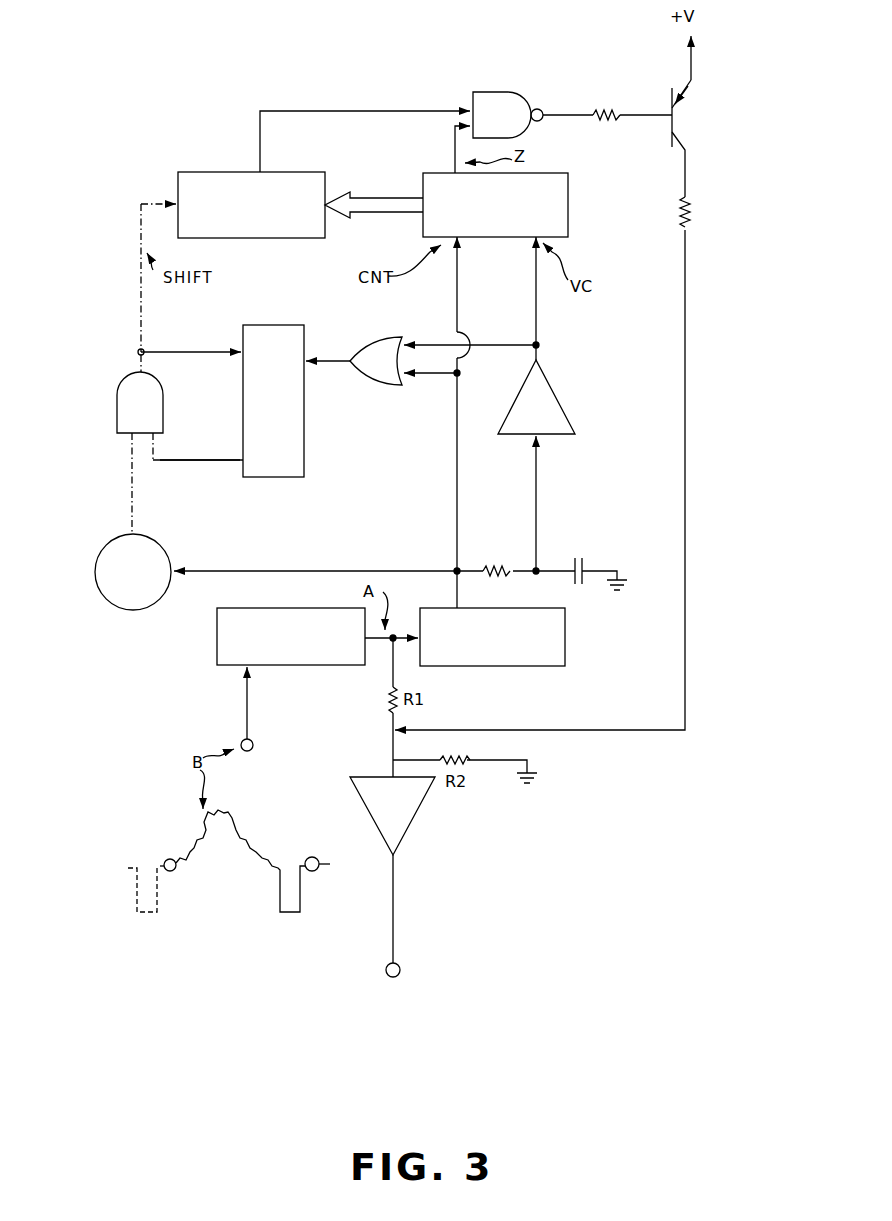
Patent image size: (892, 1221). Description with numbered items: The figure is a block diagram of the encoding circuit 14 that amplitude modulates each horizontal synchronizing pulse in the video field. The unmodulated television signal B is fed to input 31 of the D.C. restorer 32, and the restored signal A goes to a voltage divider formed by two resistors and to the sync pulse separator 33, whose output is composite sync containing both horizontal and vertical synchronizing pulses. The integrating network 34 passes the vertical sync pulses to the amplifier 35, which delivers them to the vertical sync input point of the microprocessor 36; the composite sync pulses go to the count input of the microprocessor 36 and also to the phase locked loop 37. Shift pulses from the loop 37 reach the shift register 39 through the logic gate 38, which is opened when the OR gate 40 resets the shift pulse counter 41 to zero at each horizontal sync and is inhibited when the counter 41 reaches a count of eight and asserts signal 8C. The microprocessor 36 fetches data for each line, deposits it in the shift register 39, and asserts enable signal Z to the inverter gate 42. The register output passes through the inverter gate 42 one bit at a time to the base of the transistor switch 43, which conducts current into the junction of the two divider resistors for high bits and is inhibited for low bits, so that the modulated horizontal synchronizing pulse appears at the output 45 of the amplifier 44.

The encoding circuit 14 is at (699, 453).
The input 31 is at (254, 743).
The D.C. restorer 32 is at (301, 646).
The sync pulse separator 33 is at (502, 646).
The integrating network 34 is at (518, 581).
The amplifier 35 is at (545, 425).
The microprocessor 36 is at (505, 217).
The phase locked loop 37 is at (143, 584).
The logic gate 38 is at (148, 416).
The shift register 39 is at (262, 217).
The OR gate 40 is at (384, 371).
The shift pulse counter 41 is at (283, 417).
The inverter gate 42 is at (508, 126).
The transistor switch 43 is at (682, 118).
The amplifier 44 is at (403, 812).
The output 45 is at (400, 968).
The signal 8C is at (190, 463).